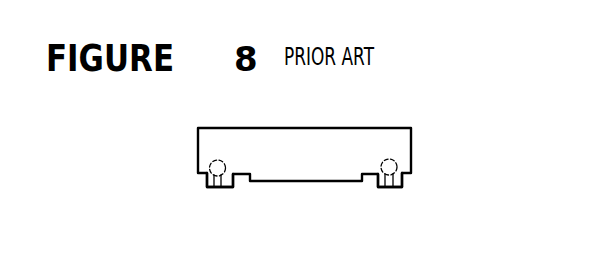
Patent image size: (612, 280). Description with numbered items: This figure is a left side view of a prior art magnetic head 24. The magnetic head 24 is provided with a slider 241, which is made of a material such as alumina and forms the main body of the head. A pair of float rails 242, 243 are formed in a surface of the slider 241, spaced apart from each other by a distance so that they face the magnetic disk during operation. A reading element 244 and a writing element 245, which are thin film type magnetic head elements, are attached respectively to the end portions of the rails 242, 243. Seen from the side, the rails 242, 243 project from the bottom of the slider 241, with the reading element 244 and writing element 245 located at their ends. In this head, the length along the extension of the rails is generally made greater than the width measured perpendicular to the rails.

The magnetic head 24 is at (196, 108).
The slider 241 is at (320, 130).
The float rail 242 is at (214, 179).
The float rail 243 is at (391, 177).
The reading element 244 is at (198, 175).
The writing element 245 is at (397, 175).